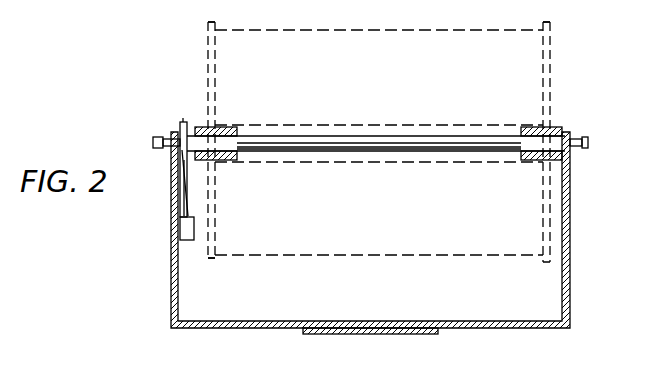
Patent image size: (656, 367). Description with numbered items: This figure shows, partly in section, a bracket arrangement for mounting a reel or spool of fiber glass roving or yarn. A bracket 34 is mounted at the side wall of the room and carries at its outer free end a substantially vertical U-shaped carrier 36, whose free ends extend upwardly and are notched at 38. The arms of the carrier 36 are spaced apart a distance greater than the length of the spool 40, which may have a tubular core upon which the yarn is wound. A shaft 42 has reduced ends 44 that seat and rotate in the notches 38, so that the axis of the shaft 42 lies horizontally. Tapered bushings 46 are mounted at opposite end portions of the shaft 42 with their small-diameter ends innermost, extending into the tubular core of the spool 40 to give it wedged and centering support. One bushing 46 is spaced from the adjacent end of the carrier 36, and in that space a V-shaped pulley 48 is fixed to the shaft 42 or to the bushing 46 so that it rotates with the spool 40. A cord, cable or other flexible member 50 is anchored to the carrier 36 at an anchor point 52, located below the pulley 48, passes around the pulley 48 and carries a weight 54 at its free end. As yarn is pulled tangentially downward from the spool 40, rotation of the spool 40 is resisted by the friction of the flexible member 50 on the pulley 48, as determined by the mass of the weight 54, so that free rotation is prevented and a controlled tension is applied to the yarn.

The bracket 34 is at (399, 334).
The U-shaped carrier 36 is at (172, 276).
The notch 38 is at (177, 132).
The spool 40 is at (462, 255).
The shaft 42 is at (406, 137).
The reduced end 44 is at (163, 142).
The tapered bushing 46 is at (232, 161).
The V-shaped pulley 48 is at (183, 120).
The flexible member 50 is at (187, 192).
The anchor point 52 is at (180, 198).
The weight 54 is at (190, 241).